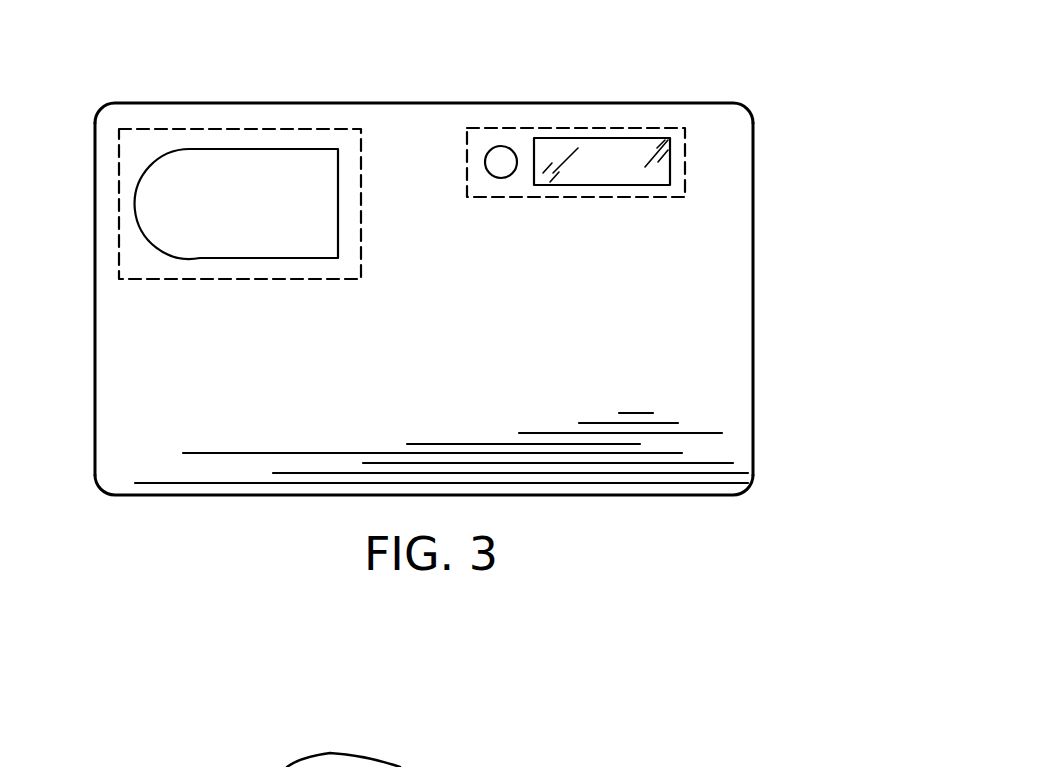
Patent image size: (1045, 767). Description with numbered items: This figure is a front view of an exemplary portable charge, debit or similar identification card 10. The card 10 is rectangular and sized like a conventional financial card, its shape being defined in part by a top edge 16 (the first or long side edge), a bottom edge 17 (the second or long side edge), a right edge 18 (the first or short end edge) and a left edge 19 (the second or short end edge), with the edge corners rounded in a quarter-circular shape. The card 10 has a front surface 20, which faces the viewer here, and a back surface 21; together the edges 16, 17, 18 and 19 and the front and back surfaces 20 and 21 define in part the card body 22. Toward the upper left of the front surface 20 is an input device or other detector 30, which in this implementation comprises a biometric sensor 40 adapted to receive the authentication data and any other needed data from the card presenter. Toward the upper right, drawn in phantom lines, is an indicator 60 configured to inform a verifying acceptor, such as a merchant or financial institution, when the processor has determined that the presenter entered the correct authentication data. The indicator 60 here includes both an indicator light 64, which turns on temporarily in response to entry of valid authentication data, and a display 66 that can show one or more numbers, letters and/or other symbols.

The card 10 is at (645, 50).
The top edge 16 is at (431, 103).
The bottom edge 17 is at (293, 496).
The right edge 18 is at (753, 417).
The left edge 19 is at (96, 430).
The front surface 20 is at (718, 225).
The back surface 21 is at (753, 143).
The card body 22 is at (710, 353).
The input device or detector 30 is at (216, 127).
The biometric sensor 40 is at (177, 225).
The indicator 60 is at (561, 126).
The indicator light 64 is at (501, 162).
The display 66 is at (622, 163).